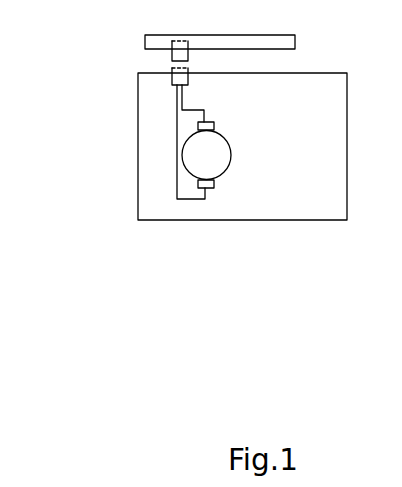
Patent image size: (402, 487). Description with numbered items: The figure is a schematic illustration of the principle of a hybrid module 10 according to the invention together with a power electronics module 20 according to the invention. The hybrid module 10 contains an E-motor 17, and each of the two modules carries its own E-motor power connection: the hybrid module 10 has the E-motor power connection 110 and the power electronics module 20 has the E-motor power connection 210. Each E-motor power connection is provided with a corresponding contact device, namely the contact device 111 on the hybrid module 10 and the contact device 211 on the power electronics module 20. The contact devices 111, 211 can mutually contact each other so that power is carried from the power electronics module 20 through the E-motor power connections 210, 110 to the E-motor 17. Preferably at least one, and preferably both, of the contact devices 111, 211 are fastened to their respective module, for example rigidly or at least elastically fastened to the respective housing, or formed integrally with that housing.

The hybrid module 10 is at (138, 159).
The E-motor 17 is at (228, 166).
The power electronics module 20 is at (295, 42).
The E-motor power connection 110 is at (241, 94).
The contact device 111 is at (188, 77).
The E-motor power connection 210 is at (108, 72).
The contact device 211 is at (172, 57).